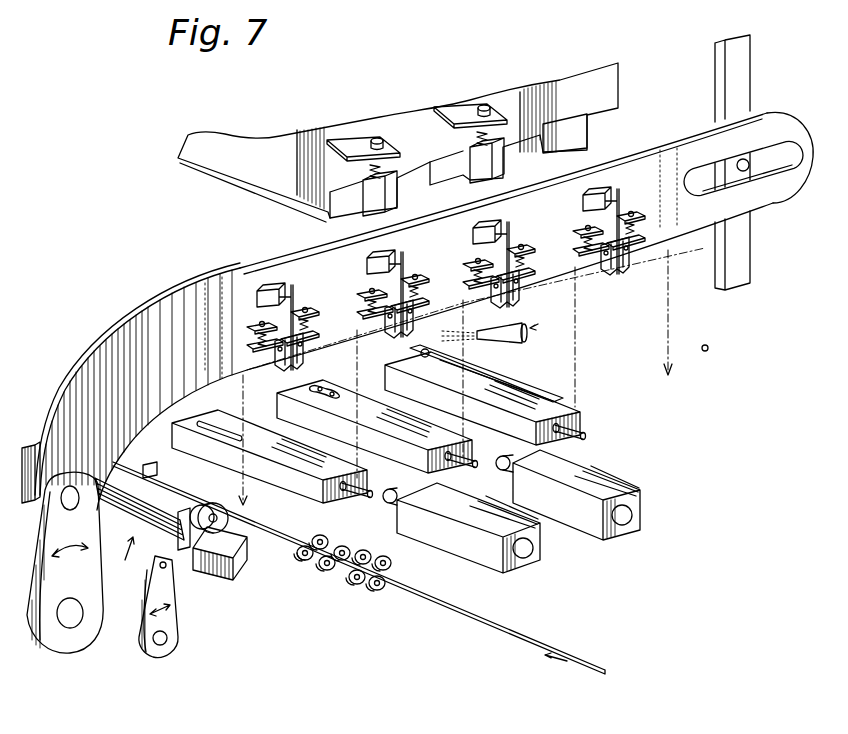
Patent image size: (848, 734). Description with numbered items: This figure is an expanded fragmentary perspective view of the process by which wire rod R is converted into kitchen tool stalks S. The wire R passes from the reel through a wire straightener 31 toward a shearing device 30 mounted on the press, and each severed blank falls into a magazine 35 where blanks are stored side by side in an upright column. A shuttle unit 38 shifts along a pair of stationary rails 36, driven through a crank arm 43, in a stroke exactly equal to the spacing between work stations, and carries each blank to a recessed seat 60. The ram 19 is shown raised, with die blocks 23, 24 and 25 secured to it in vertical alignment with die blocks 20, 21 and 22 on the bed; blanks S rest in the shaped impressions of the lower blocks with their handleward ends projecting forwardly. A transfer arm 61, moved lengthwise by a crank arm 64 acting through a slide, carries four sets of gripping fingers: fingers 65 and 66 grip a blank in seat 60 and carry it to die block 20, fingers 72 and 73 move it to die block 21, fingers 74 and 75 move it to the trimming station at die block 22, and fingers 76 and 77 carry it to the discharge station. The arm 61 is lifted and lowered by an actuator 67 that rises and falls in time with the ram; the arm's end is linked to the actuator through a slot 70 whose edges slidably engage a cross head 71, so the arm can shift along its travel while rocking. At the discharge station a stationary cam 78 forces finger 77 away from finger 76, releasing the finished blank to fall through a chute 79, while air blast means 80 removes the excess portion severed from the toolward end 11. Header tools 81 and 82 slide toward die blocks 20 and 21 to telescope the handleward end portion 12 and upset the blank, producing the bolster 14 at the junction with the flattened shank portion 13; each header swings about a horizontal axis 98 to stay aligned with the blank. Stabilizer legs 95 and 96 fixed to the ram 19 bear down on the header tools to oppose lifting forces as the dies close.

The toolward end portion 11 is at (416, 354).
The handleward end portion 12 is at (366, 476).
The shank portion 13 is at (498, 368).
The bolster 14 is at (508, 381).
The ram 19 is at (548, 93).
The die block 20 is at (342, 498).
The die block 21 is at (447, 466).
The die block 22 is at (560, 438).
The die block 23 is at (338, 195).
The die block 24 is at (443, 168).
The die block 25 is at (585, 128).
The shearing device 30 is at (208, 548).
The wire straightener 31 is at (352, 575).
The magazine 35 is at (139, 531).
The rails 36 is at (152, 463).
The shuttle unit 38 is at (255, 441).
The crank arm 43 is at (178, 623).
The recessed seat 60 is at (262, 521).
The arm 61 is at (194, 300).
The crank arm 64 is at (47, 640).
The finger 65 is at (272, 372).
The finger 66 is at (303, 364).
The actuator 67 is at (735, 83).
The slot 70 is at (775, 165).
The cross head 71 is at (746, 158).
The finger 72 is at (384, 340).
The finger 73 is at (448, 337).
The finger 74 is at (498, 305).
The finger 75 is at (517, 296).
The finger 76 is at (606, 268).
The finger 77 is at (627, 264).
The stationary cam 78 is at (708, 345).
The chute 79 is at (685, 405).
The air blast means 80 is at (518, 338).
The header tool 81 is at (513, 573).
The header tool 82 is at (603, 540).
The stabilizer leg 95 is at (378, 208).
The stabilizer leg 96 is at (492, 172).
The horizontal axis 98 is at (663, 516).
The wire rod R is at (172, 484).
The stalk blank S is at (217, 412).